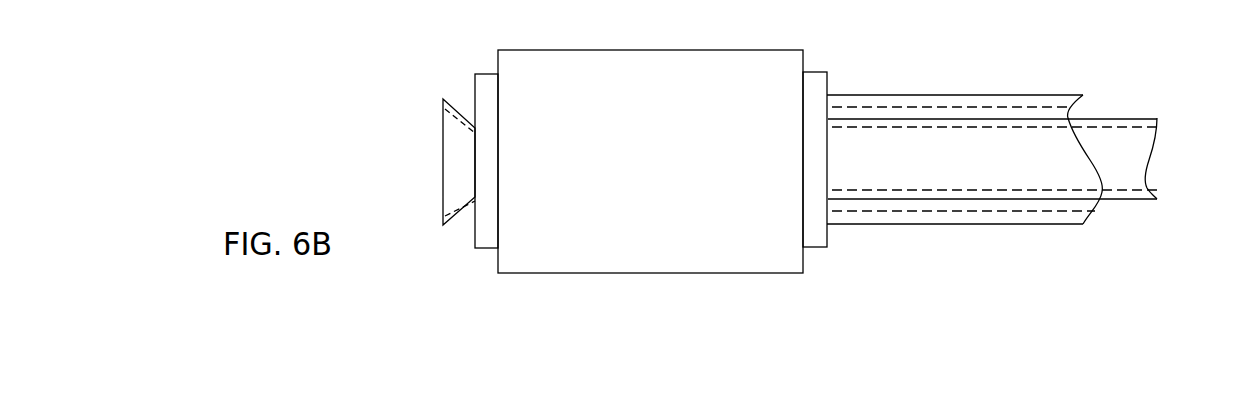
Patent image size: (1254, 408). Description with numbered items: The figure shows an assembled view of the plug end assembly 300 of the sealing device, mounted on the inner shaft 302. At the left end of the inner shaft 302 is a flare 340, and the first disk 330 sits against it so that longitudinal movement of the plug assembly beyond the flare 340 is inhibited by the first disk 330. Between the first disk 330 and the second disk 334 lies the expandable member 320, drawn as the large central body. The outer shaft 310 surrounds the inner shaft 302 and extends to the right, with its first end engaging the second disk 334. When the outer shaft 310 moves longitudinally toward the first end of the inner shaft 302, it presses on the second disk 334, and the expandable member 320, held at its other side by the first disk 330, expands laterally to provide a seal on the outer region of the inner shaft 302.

The plug end assembly 300 is at (347, 71).
The inner shaft 302 is at (1102, 118).
The outer shaft 310 is at (907, 95).
The expandable member 320 is at (627, 50).
The first disk 330 is at (483, 74).
The second disk 334 is at (822, 72).
The flare 340 is at (459, 217).